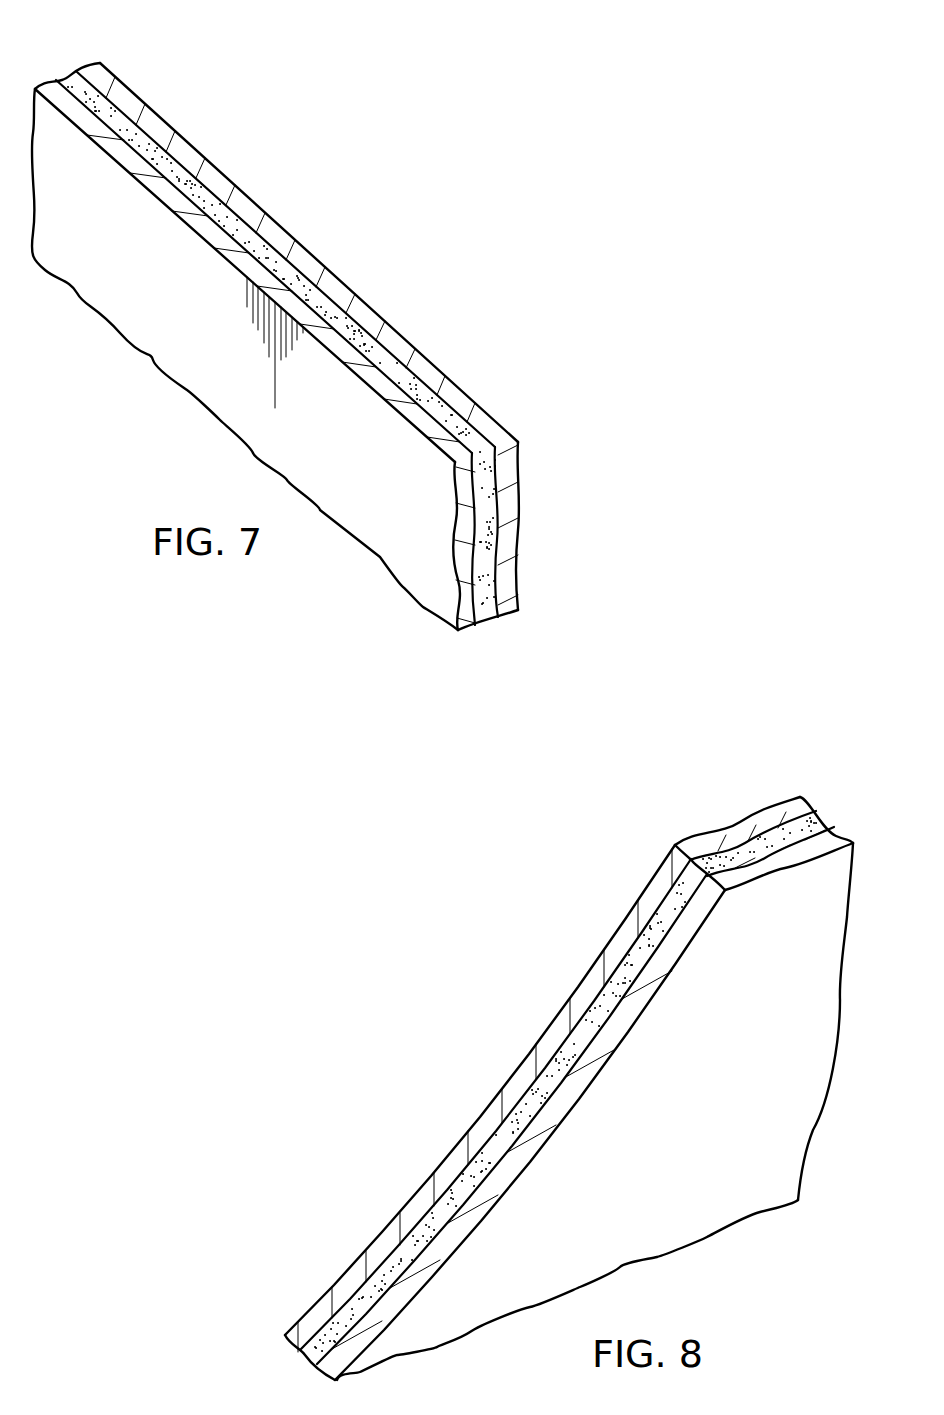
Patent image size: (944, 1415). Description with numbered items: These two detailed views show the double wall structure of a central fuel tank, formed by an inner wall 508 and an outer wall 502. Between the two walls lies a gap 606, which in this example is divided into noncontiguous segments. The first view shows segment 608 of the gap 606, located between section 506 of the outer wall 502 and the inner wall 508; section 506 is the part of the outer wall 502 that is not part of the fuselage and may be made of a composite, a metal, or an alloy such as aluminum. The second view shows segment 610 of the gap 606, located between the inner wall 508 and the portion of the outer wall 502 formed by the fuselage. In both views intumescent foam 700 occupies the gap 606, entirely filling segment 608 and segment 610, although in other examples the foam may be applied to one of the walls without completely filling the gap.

In FIG. 7, the outer wall 502 is at (187, 208).
In FIG. 8, the outer wall 502 is at (565, 1100).
In FIG. 7, the section 506 is at (183, 359).
In FIG. 8, the section 506 is at (720, 1213).
In FIG. 7, the inner wall 508 is at (330, 283).
In FIG. 8, the inner wall 508 is at (553, 1040).
In FIG. 7, the gap 606 is at (243, 233).
In FIG. 8, the gap 606 is at (605, 1008).
In FIG. 7, the segment 608 is at (64, 70).
In FIG. 8, the segment 610 is at (836, 810).
In FIG. 7, the intumescent foam 700 is at (373, 350).
In FIG. 8, the intumescent foam 700 is at (501, 1143).